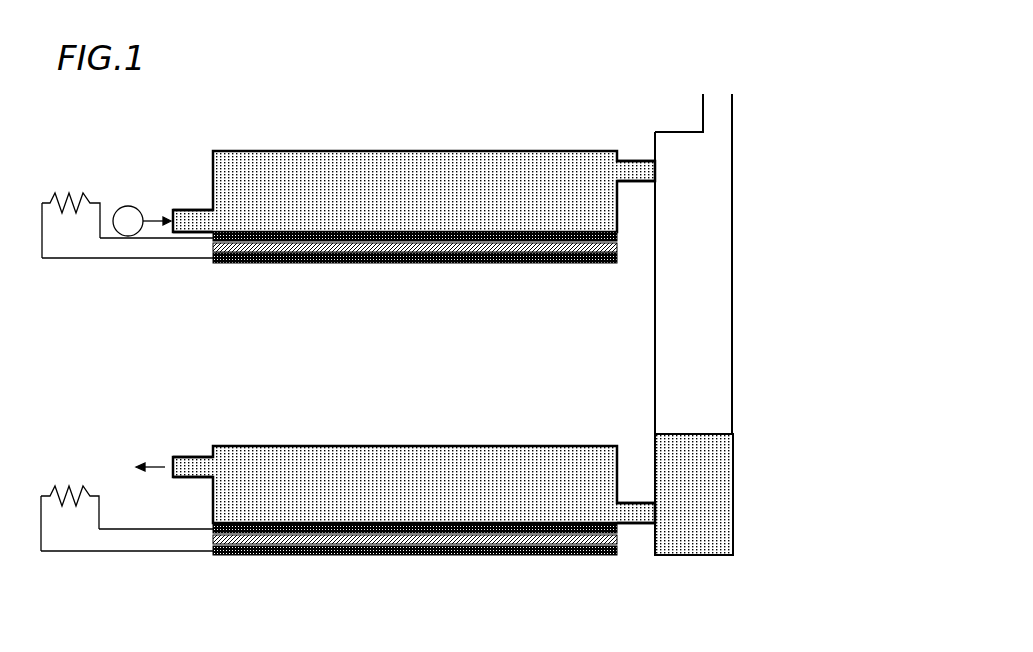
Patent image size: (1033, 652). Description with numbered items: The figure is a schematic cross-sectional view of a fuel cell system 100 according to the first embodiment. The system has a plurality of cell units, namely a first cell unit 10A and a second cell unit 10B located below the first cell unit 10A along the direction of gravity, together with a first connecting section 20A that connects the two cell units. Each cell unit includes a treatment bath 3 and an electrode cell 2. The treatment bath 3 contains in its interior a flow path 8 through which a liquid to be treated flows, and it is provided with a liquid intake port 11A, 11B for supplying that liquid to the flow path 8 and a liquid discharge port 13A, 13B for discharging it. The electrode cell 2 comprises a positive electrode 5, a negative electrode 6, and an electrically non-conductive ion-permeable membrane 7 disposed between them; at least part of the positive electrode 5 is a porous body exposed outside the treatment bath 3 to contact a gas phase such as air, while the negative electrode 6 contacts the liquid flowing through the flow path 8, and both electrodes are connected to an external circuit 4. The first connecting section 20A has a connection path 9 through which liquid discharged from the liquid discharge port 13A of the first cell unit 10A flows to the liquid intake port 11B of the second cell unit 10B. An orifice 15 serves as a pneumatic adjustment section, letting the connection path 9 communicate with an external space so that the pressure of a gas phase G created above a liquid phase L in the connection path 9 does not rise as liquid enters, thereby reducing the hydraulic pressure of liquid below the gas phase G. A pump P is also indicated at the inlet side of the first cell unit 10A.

The fuel cell system 100 is at (756, 285).
The first cell unit 10A is at (348, 208).
The second cell unit 10B is at (348, 446).
The electrode cell 2 is at (368, 299).
The treatment bath 3 is at (375, 150).
The external circuit 4 is at (52, 253).
The positive electrode 5 is at (213, 261).
The negative electrode 6 is at (213, 238).
The ion-permeable membrane 7 is at (213, 248).
The flow path 8 is at (299, 199).
The connection path 9 is at (680, 277).
The liquid intake port 11A is at (198, 209).
The liquid intake port 11B is at (641, 500).
The liquid discharge port 13A is at (636, 160).
The liquid discharge port 13B is at (192, 470).
The orifice 15 is at (716, 103).
The first connecting section 20A is at (743, 243).
The gas phase G is at (715, 364).
The liquid phase L is at (710, 476).
The pump P is at (142, 221).